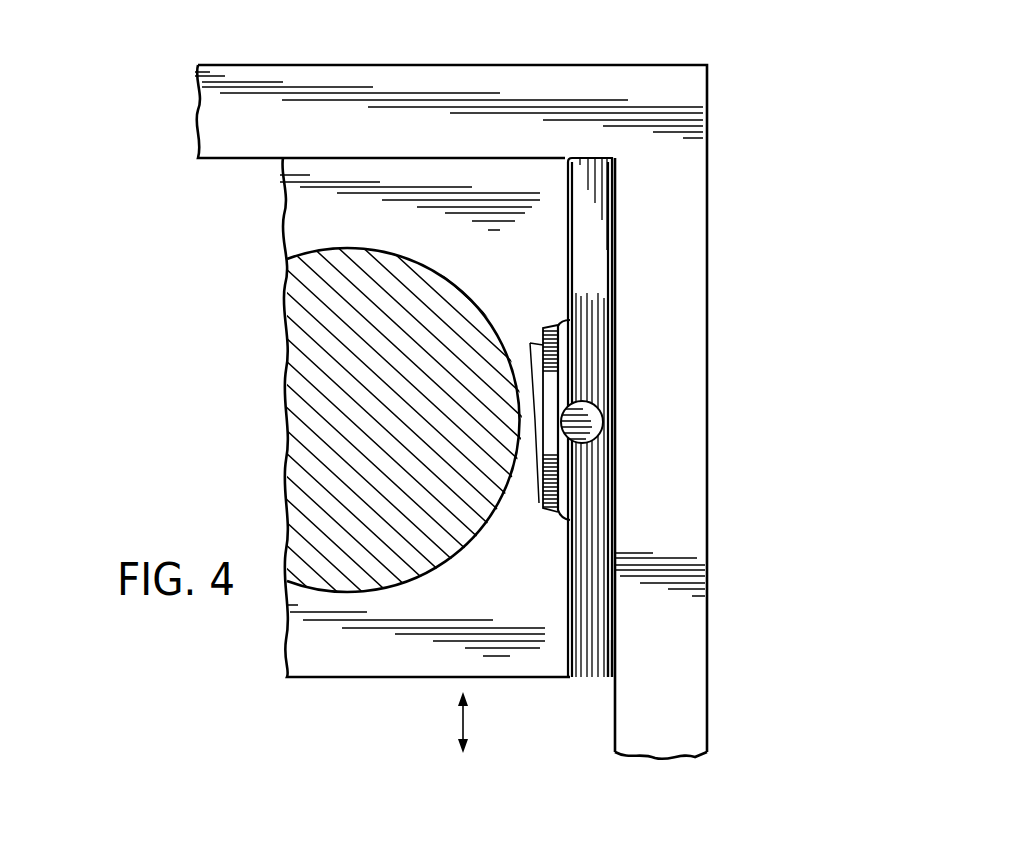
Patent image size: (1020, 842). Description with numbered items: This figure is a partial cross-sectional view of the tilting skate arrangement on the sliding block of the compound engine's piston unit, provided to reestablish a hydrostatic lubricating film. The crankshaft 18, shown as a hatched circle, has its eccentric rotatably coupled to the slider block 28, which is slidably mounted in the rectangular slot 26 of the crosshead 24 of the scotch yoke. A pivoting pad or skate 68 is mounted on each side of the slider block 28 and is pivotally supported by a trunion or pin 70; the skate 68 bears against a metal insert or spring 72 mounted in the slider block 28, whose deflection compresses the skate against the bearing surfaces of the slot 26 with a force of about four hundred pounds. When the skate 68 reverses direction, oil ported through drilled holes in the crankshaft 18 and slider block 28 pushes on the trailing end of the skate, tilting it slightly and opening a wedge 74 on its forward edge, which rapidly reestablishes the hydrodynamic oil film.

The crankshaft 18 is at (476, 304).
The crosshead 24 is at (707, 226).
The rectangular slot 26 is at (585, 713).
The slider block 28 is at (405, 677).
The pivoting pad or skate 68 is at (593, 305).
The trunion or pin 70 is at (600, 406).
The metal insert or spring 72 is at (556, 483).
The wedge 74 is at (612, 659).